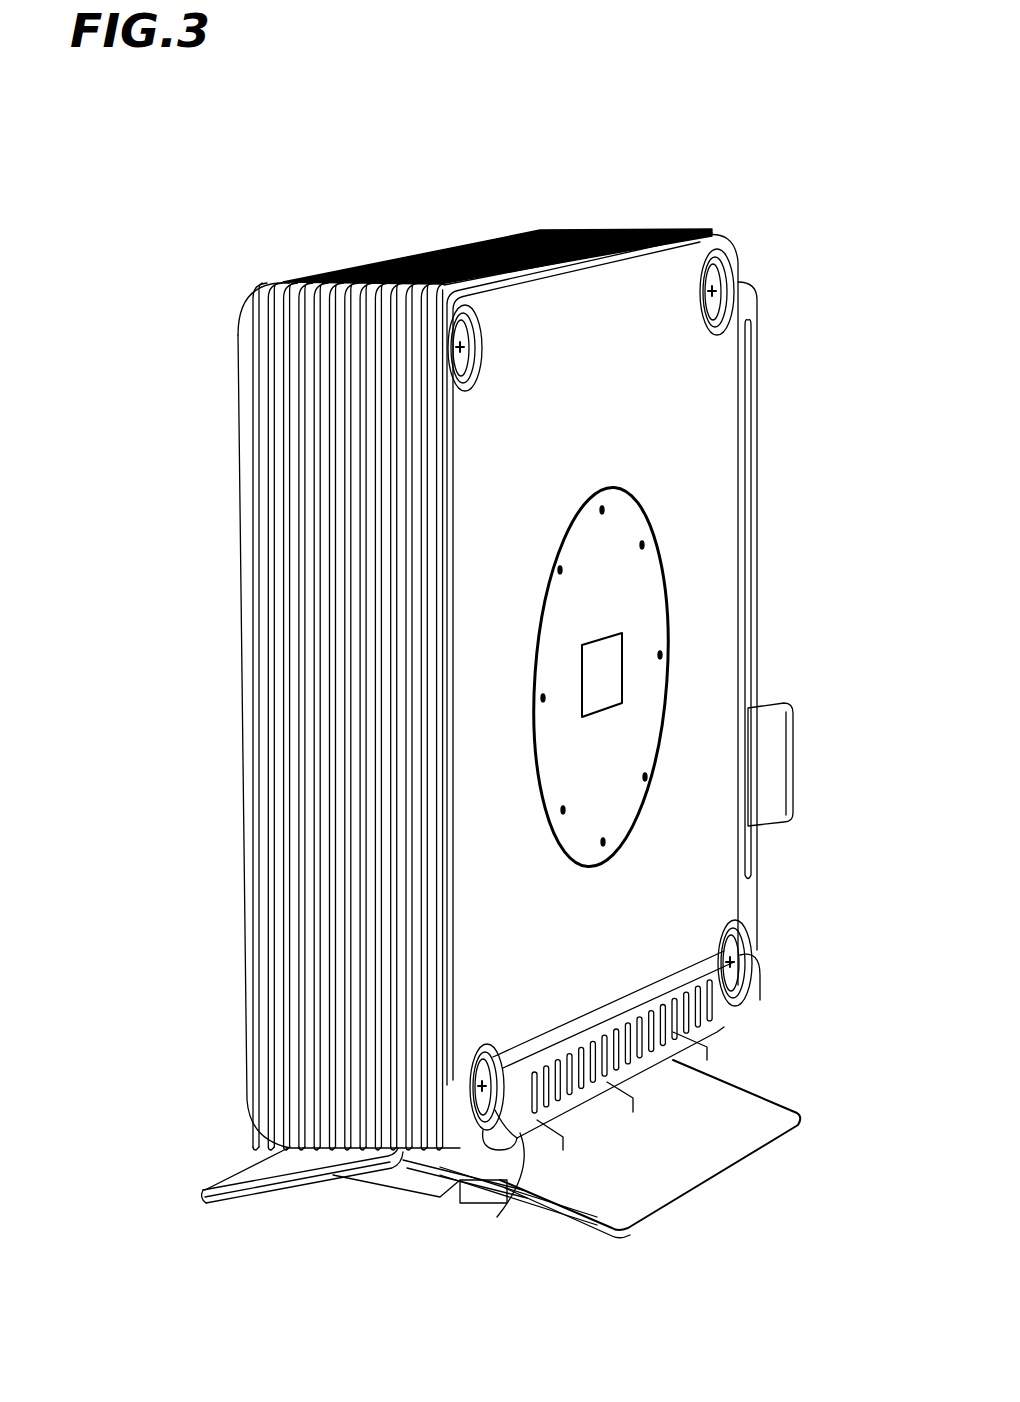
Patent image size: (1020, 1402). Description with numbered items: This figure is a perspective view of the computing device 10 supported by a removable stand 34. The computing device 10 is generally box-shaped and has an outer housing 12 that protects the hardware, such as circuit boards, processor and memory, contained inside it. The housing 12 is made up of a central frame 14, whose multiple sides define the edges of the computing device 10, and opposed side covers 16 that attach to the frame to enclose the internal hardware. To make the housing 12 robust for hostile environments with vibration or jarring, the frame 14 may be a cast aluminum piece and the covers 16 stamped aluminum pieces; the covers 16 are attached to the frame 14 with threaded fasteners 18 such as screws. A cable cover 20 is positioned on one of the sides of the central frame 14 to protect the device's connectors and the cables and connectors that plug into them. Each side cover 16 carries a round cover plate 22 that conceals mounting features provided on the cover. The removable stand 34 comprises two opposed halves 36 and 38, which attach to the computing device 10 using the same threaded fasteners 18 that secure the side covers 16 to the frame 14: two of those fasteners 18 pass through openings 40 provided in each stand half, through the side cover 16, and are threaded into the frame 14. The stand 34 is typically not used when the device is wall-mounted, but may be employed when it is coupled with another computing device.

The computing device 10 is at (180, 172).
The outer housing 12 is at (280, 250).
The central frame 14 is at (412, 254).
The side covers 16 is at (240, 745).
The threaded fasteners 18 is at (692, 300).
The cable cover 20 is at (745, 300).
The cover plates 22 is at (582, 838).
The removable stand 34 is at (574, 1262).
The stand half 36 is at (240, 1192).
The stand half 38 is at (698, 1155).
The openings 40 is at (760, 970).